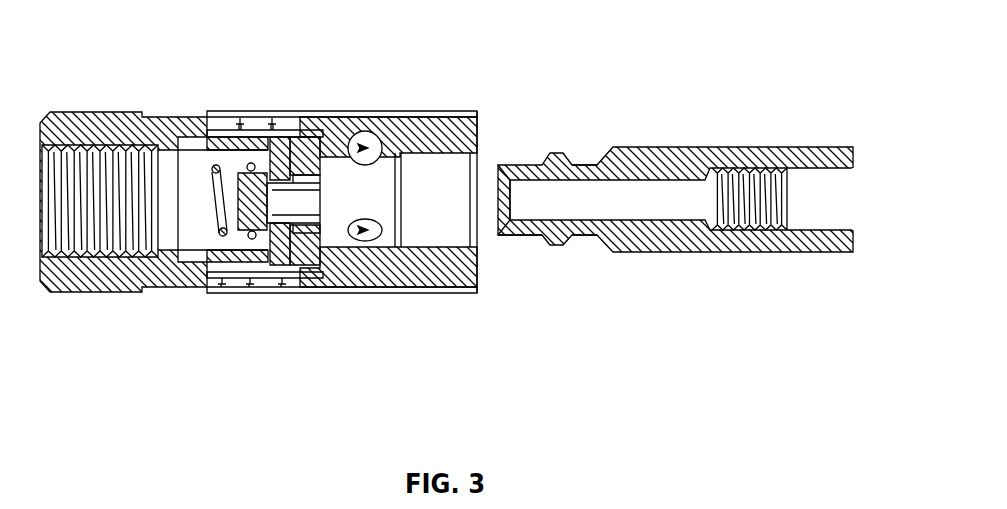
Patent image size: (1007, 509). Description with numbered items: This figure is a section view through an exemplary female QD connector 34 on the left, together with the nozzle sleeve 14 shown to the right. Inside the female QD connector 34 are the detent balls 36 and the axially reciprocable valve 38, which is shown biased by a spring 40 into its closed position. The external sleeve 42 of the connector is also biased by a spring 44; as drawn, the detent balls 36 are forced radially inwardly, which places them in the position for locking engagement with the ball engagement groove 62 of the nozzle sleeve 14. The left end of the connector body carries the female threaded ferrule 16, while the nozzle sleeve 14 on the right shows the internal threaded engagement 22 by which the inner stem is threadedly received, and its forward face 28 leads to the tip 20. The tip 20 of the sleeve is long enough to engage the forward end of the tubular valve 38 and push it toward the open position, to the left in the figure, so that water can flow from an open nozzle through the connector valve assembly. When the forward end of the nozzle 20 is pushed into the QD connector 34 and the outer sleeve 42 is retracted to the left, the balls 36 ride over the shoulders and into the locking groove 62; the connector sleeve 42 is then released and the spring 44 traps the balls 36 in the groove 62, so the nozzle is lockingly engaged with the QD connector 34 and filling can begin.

The female QD connector 34 is at (350, 194).
The female threaded ferrule 16 is at (64, 112).
The spring 44 is at (262, 111).
The external sleeve 42 is at (362, 114).
The spring 40 is at (222, 204).
The valve 38 is at (250, 203).
The detent balls 36 is at (360, 231).
The nozzle sleeve 14 is at (695, 232).
The nozzle tip 28 is at (495, 190).
The tip 20 is at (520, 237).
The ball engagement groove 62 is at (590, 237).
The internal threads 22 is at (772, 199).